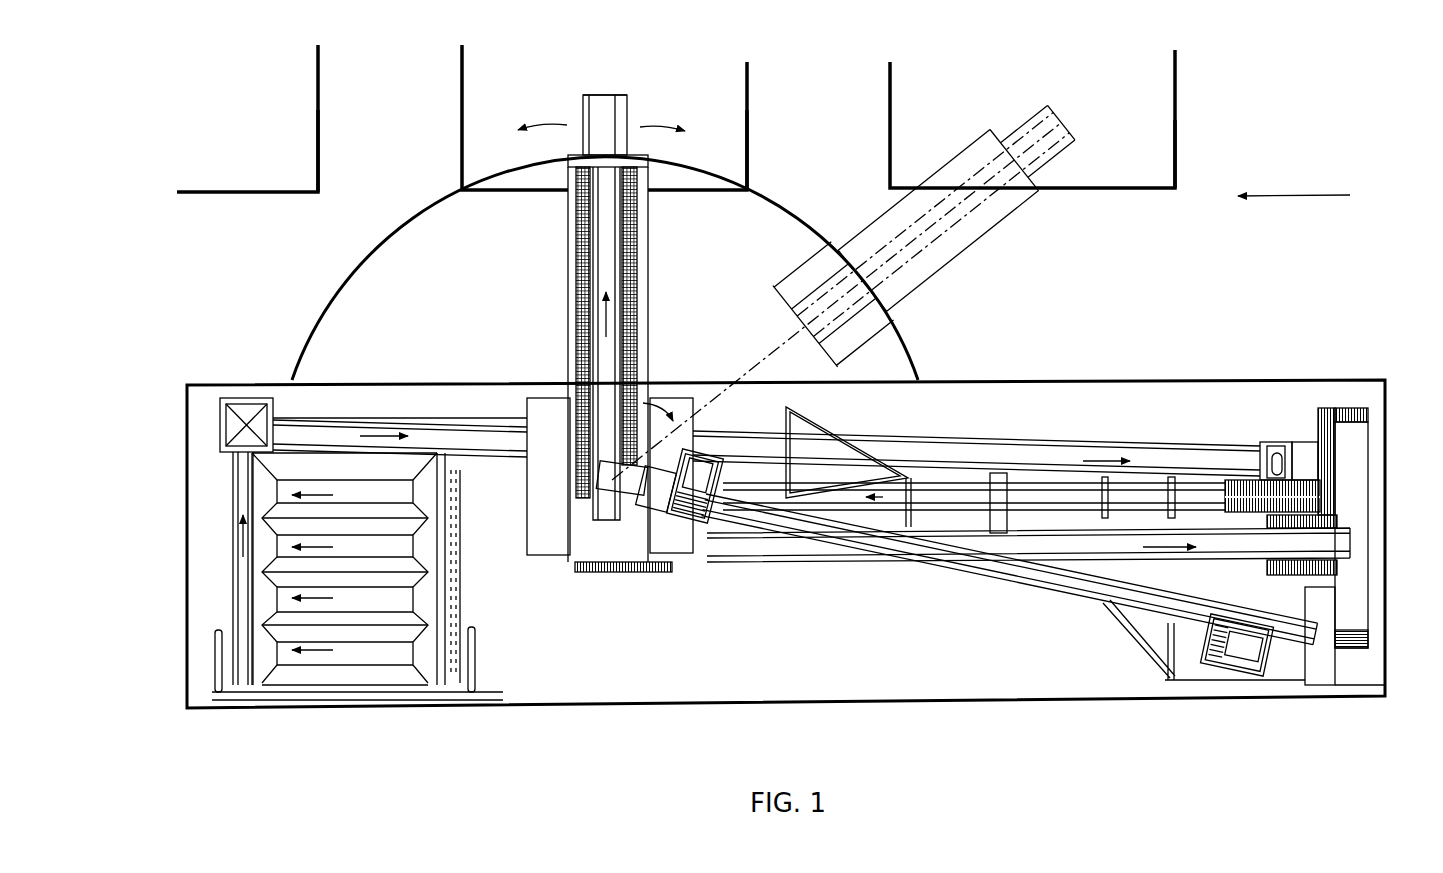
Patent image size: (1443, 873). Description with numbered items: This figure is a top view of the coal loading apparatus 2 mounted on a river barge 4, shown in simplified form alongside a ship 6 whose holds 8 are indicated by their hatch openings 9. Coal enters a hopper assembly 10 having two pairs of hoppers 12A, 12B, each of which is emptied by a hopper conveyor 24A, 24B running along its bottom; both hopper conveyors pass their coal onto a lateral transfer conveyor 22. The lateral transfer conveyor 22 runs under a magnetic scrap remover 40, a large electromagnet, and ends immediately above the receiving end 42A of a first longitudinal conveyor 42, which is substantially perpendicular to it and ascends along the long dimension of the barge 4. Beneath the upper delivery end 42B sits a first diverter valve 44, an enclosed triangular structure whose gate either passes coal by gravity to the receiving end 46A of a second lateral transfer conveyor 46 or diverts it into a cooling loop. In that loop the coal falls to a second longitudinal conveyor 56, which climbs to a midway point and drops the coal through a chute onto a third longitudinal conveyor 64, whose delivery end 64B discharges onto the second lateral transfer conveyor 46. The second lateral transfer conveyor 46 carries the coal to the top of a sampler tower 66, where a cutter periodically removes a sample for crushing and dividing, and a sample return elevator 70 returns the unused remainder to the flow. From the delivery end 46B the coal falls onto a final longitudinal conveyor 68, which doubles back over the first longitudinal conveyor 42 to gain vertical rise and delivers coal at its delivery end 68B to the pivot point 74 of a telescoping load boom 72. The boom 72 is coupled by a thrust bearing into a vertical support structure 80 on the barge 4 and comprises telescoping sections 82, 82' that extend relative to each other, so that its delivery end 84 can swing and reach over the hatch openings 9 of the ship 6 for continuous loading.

The apparatus 2 is at (634, 574).
The barge 4 is at (946, 700).
The ship 6 is at (1304, 194).
The holds 8 is at (305, 70).
The hatch openings 9 is at (320, 118).
The hopper assembly 10 is at (393, 675).
The hopper pair 12A is at (395, 620).
The hopper pair 12B is at (350, 480).
The lateral transfer conveyor 22 is at (240, 558).
The hopper conveyor 24A is at (302, 598).
The hopper conveyor 24B is at (403, 515).
The magnetic scrap remover 40 is at (250, 398).
The first longitudinal conveyor 42 is at (492, 440).
The receiving end 42A is at (288, 425).
The upper delivery end 42B is at (1242, 456).
The first diverter valve 44 is at (1285, 450).
The second lateral transfer conveyor 46 is at (1355, 535).
The receiving end 46A is at (1352, 422).
The delivery end 46B is at (1362, 633).
The second longitudinal conveyor 56 is at (1022, 500).
The third longitudinal conveyor 64 is at (1162, 545).
The delivery end 64B is at (1312, 545).
The sampler tower 66 is at (1353, 664).
The final longitudinal conveyor 68 is at (975, 570).
The delivery end 68B is at (628, 470).
The sample return elevator 70 is at (1235, 657).
The telescoping load boom 72 is at (568, 305).
The pivot point 74 is at (608, 512).
The vertical support structure 80 is at (556, 558).
The telescoping section 82 is at (713, 343).
The telescoping section 82' is at (721, 157).
The delivery end 84 is at (605, 100).